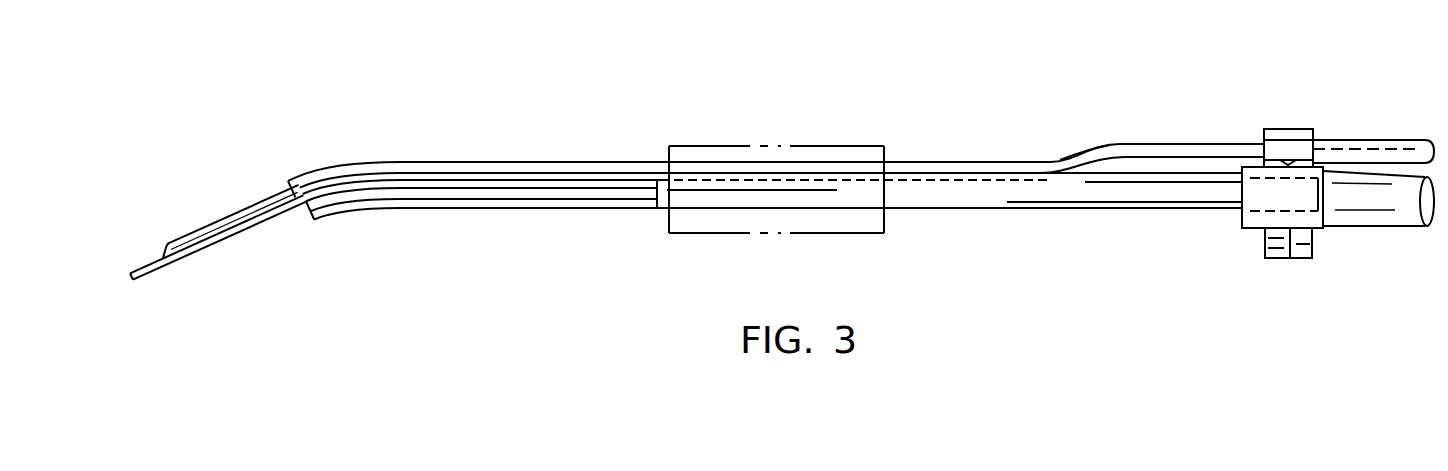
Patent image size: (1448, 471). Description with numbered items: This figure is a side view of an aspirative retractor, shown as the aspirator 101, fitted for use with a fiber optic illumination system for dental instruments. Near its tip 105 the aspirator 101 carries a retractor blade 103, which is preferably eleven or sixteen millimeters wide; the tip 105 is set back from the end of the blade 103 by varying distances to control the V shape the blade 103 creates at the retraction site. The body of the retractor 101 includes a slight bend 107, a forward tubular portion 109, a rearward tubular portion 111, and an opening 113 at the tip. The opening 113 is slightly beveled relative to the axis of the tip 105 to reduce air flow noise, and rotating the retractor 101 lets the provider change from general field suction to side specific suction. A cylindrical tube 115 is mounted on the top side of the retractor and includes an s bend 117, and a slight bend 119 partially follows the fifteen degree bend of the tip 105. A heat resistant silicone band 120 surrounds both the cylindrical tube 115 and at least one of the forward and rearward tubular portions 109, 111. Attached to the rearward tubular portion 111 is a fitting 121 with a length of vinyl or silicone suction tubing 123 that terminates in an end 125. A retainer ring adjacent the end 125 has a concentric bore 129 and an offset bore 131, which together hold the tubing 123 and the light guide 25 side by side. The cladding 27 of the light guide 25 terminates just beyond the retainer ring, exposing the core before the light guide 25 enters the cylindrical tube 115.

The aspirator 101 is at (567, 137).
The retractor blade 103 is at (206, 248).
The tip 105 is at (208, 229).
The slight bend 107 is at (353, 208).
The forward tubular portion 109 is at (552, 198).
The rearward tubular portion 111 is at (981, 198).
The opening 113 is at (160, 260).
The cylindrical tube 115 is at (377, 160).
The s bend 117 is at (1118, 142).
The slight bend 119 is at (320, 176).
The silicone band 120 is at (738, 146).
The fitting 121 is at (1292, 100).
The suction tubing 123 is at (1373, 200).
The end 125 is at (1242, 218).
The concentric bore 129 is at (1290, 259).
The offset bore 131 is at (1303, 128).
The light guide 25 is at (1237, 141).
The cladding 27 is at (1254, 128).